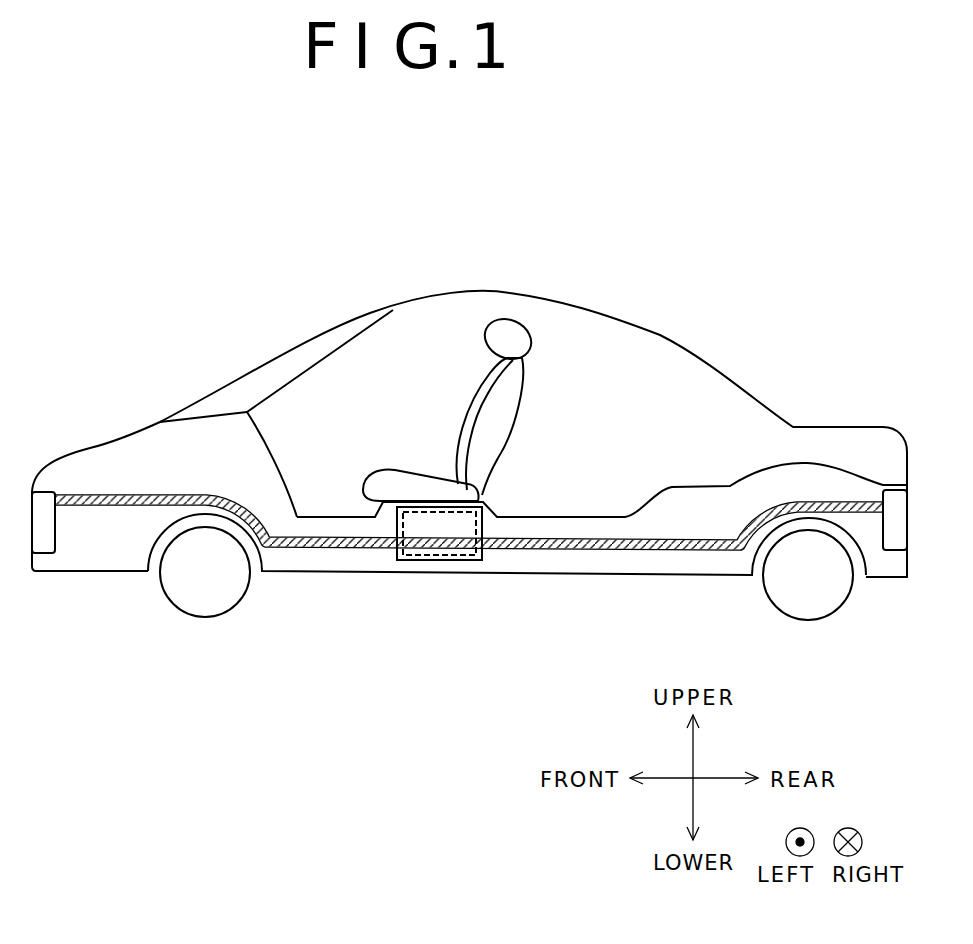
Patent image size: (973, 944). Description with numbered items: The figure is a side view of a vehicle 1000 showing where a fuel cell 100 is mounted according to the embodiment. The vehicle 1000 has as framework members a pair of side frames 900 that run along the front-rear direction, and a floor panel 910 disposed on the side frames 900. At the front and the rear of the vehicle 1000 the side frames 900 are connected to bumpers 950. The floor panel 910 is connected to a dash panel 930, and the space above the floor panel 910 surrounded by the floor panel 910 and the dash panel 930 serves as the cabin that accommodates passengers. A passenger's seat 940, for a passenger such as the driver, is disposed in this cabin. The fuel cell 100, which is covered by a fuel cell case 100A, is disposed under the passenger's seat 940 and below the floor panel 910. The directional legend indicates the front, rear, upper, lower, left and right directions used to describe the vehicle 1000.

The vehicle 1000 is at (188, 207).
The side frames 900 is at (580, 549).
The floor panel 910 is at (590, 517).
The dash panel 930 is at (257, 420).
The passenger's seat 940 is at (390, 470).
The bumpers 950 is at (43, 553).
The fuel cell 100 is at (458, 560).
The fuel cell case 100A is at (405, 560).